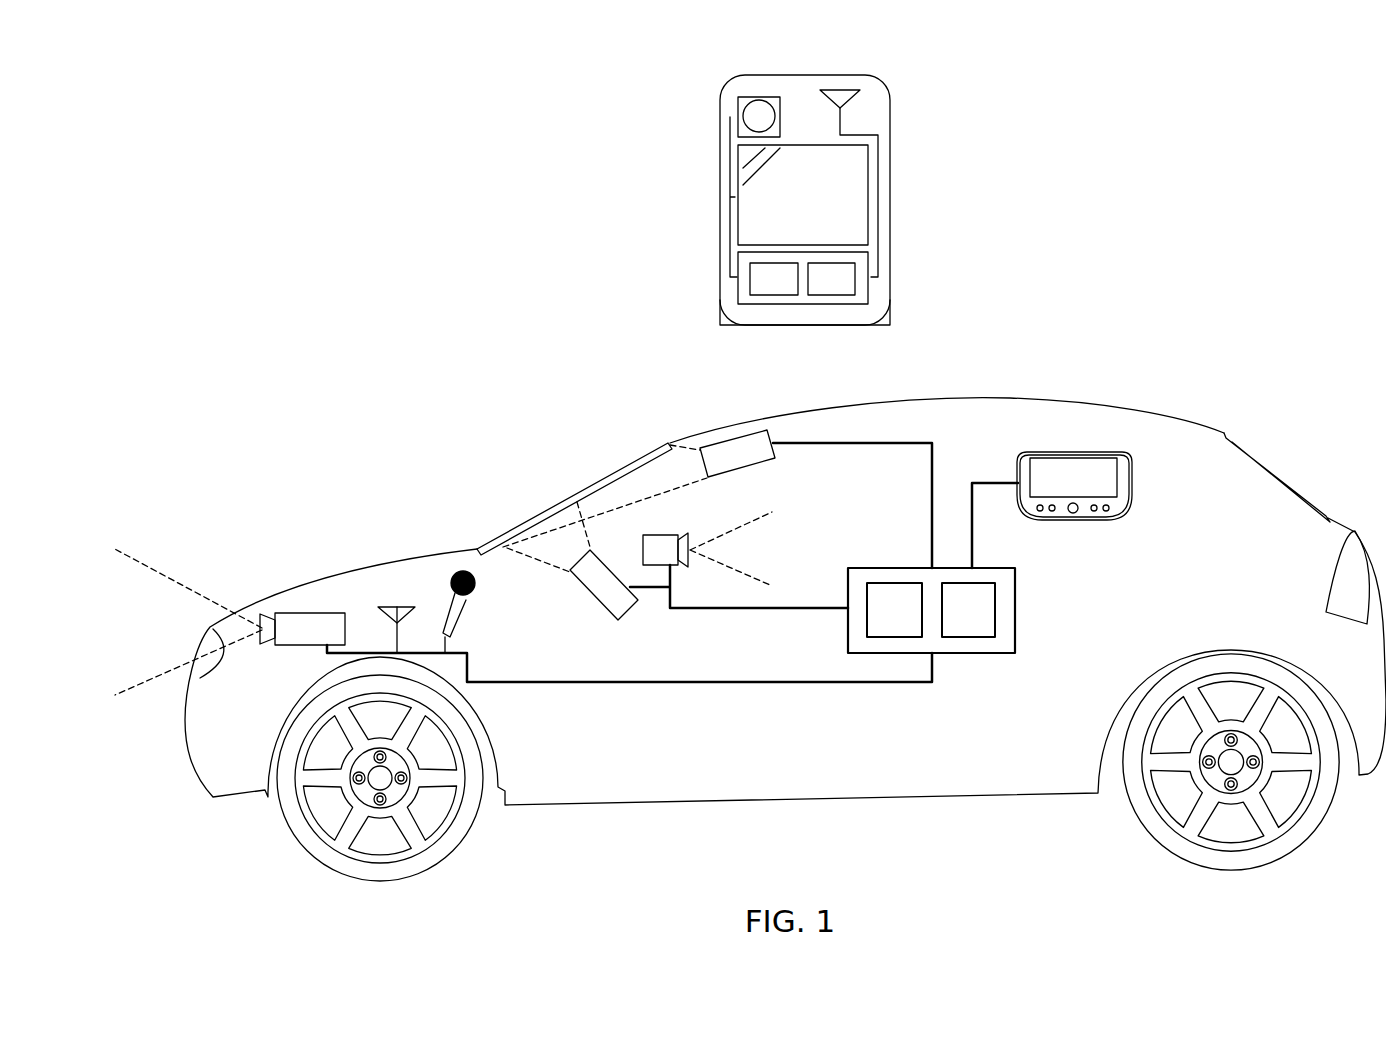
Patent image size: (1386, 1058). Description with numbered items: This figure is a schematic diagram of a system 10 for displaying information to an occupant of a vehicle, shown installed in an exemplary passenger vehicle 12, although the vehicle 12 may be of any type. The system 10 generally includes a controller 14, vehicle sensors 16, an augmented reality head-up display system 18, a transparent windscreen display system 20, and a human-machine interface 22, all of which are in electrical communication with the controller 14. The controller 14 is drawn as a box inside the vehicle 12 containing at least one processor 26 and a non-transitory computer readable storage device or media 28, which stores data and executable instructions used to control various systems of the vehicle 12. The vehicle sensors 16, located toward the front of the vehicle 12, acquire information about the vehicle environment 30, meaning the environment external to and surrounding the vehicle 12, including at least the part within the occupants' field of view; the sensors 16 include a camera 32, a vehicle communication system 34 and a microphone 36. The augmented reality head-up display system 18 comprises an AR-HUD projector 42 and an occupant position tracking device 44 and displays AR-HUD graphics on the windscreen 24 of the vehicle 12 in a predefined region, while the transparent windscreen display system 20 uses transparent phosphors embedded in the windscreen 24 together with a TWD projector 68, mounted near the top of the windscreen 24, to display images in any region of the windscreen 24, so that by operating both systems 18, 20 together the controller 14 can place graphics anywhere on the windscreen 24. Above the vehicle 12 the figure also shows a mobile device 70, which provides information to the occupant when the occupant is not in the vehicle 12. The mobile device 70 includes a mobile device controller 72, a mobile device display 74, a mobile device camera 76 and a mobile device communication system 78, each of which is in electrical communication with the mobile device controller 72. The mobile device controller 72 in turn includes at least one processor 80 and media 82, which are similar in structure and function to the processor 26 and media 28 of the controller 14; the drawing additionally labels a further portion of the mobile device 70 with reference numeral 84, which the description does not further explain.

The system 10 is at (364, 182).
The vehicle 12 is at (1133, 409).
The controller 14 is at (1017, 652).
The vehicle sensors 16 is at (270, 665).
The augmented reality head-up display (AR-HUD) system 18 is at (655, 607).
The transparent windscreen display (TWD) system 20 is at (802, 437).
The human-machine interface (HMI) 22 is at (1132, 498).
The windscreen 24 is at (617, 472).
The processor 26 is at (882, 622).
The non-transitory computer readable storage device or media 28 is at (956, 622).
The vehicle environment 30 is at (349, 473).
The camera 32 is at (298, 640).
The vehicle communication system 34 is at (381, 604).
The microphone 36 is at (453, 572).
The AR-HUD projector 42 is at (597, 597).
The occupant position tracking device 44 is at (652, 533).
The TWD projector 68 is at (747, 466).
The mobile device 70 is at (722, 75).
The mobile device controller 72 is at (868, 303).
The mobile device display 74 is at (791, 205).
The mobile device camera 76 is at (743, 97).
The mobile device communication system 78 is at (857, 90).
The processor 80 is at (762, 289).
The non-transitory computer readable storage device or media 82 is at (819, 289).
The user interface 84 is at (653, 165).